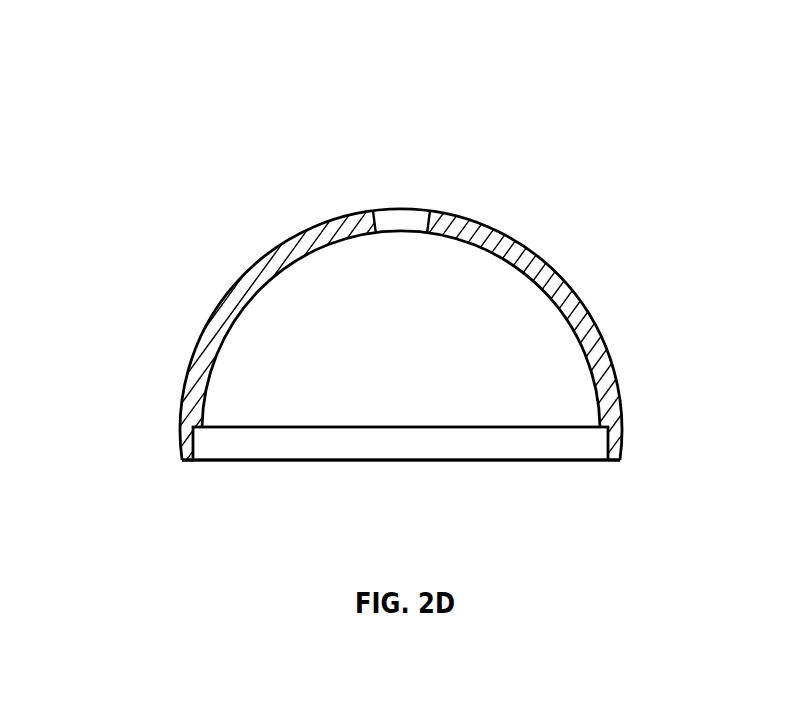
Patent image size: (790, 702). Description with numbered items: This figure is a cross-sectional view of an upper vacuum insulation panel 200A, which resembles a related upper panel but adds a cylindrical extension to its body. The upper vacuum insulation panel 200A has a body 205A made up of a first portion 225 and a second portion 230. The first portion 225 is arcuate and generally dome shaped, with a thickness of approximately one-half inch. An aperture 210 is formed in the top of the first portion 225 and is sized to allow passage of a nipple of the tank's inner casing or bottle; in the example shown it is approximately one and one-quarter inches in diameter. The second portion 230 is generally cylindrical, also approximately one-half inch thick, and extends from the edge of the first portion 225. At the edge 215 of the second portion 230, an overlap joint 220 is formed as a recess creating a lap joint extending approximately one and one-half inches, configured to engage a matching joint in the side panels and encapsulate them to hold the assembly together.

The upper vacuum insulation panel 200A is at (395, 279).
The body 205A is at (395, 331).
The aperture 210 is at (400, 209).
The edge 215 is at (185, 462).
The overlap joint 220 is at (195, 450).
The first portion 225 is at (395, 331).
The second portion 230 is at (197, 373).